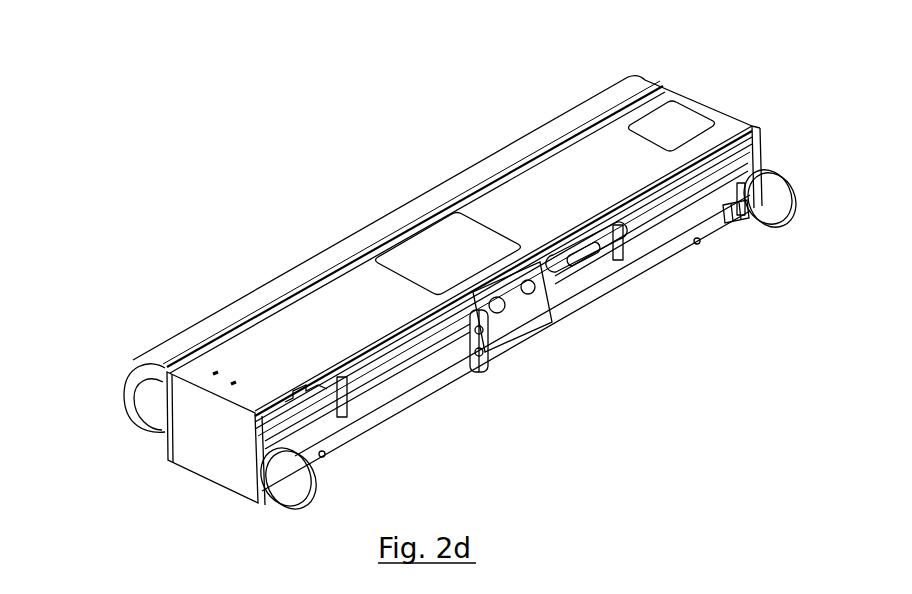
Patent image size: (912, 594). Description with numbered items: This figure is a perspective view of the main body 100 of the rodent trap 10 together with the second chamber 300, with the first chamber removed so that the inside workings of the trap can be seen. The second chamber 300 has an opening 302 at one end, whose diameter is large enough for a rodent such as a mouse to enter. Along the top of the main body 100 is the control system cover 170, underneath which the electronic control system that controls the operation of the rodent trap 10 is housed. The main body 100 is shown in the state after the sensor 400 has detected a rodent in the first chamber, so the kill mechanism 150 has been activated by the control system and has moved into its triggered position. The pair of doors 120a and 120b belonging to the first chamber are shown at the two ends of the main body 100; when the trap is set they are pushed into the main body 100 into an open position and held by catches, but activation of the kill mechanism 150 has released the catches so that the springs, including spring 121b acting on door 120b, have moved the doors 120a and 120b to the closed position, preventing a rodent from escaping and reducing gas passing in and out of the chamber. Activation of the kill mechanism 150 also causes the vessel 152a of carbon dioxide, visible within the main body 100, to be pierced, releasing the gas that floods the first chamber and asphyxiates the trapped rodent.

The rodent trap 10 is at (193, 128).
The main body 100 is at (530, 215).
The door 120a is at (293, 490).
The door 120b is at (760, 188).
The spring 121b is at (770, 210).
The kill mechanism 150 is at (640, 262).
The vessel of carbon dioxide 152a is at (633, 228).
The control system cover 170 is at (425, 245).
The second chamber 300 is at (318, 258).
The opening 302 is at (143, 407).
The sensor 400 is at (507, 327).